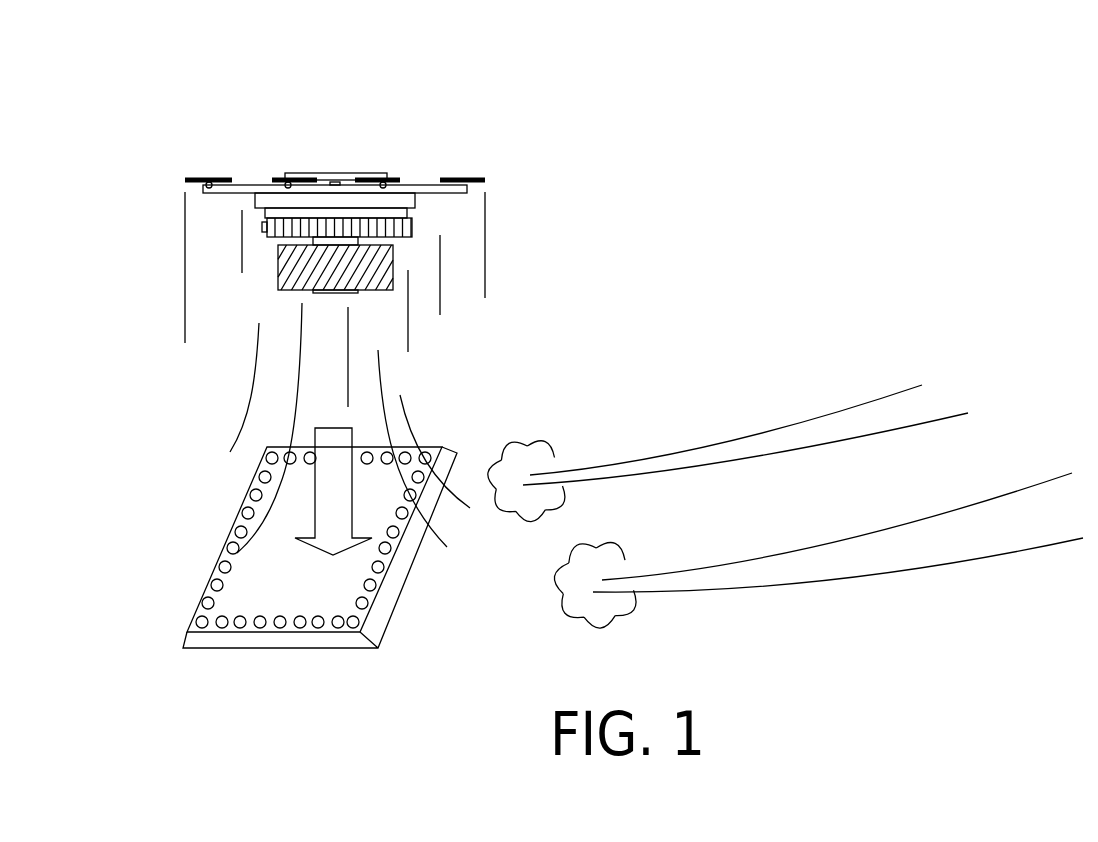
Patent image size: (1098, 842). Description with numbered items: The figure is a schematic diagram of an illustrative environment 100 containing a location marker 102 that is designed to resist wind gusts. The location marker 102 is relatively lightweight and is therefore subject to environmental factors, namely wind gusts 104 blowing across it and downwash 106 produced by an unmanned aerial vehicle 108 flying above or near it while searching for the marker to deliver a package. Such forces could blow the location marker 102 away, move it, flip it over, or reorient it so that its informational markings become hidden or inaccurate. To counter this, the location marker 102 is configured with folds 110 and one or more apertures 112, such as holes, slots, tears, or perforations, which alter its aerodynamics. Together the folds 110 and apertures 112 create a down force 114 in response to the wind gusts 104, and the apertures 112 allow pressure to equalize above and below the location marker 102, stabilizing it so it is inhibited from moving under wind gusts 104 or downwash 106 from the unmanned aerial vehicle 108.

The environment 100 is at (770, 90).
The location marker 102 is at (223, 538).
The wind gusts 104 is at (720, 447).
The downwash 106 is at (483, 283).
The unmanned aerial vehicle 108 is at (400, 148).
The folds 110 is at (233, 632).
The apertures 112 is at (200, 622).
The down force 114 is at (320, 488).